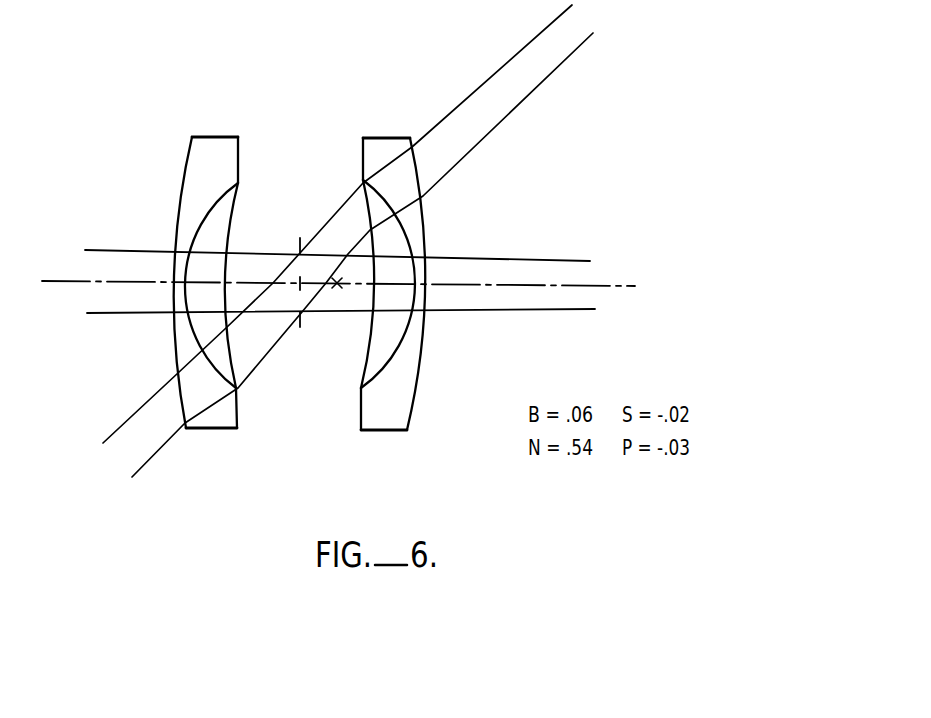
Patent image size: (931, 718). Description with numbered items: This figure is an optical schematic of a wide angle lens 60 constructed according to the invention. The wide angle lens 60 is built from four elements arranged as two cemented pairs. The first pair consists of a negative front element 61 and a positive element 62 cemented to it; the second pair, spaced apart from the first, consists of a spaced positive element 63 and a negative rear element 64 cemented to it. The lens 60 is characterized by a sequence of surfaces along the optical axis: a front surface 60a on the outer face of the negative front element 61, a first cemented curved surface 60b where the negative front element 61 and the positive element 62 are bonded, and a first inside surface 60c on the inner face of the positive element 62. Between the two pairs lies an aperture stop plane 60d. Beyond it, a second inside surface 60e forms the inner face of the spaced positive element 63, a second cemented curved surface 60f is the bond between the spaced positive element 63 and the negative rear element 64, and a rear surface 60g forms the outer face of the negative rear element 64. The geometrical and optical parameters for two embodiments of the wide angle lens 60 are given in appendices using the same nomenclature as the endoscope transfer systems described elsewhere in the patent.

The wide angle lens 60 is at (332, 56).
The front surface 60a is at (182, 168).
The first cemented curved surface 60b is at (209, 205).
The first inside surface 60c is at (297, 237).
The aperture stop plane 60d is at (299, 322).
The second inside surface 60e is at (360, 373).
The second cemented curved surface 60f is at (396, 355).
The rear surface 60g is at (498, 342).
The negative front element 61 is at (210, 147).
The positive element 62 is at (218, 215).
The spaced positive element 63 is at (382, 333).
The negative rear element 64 is at (403, 403).